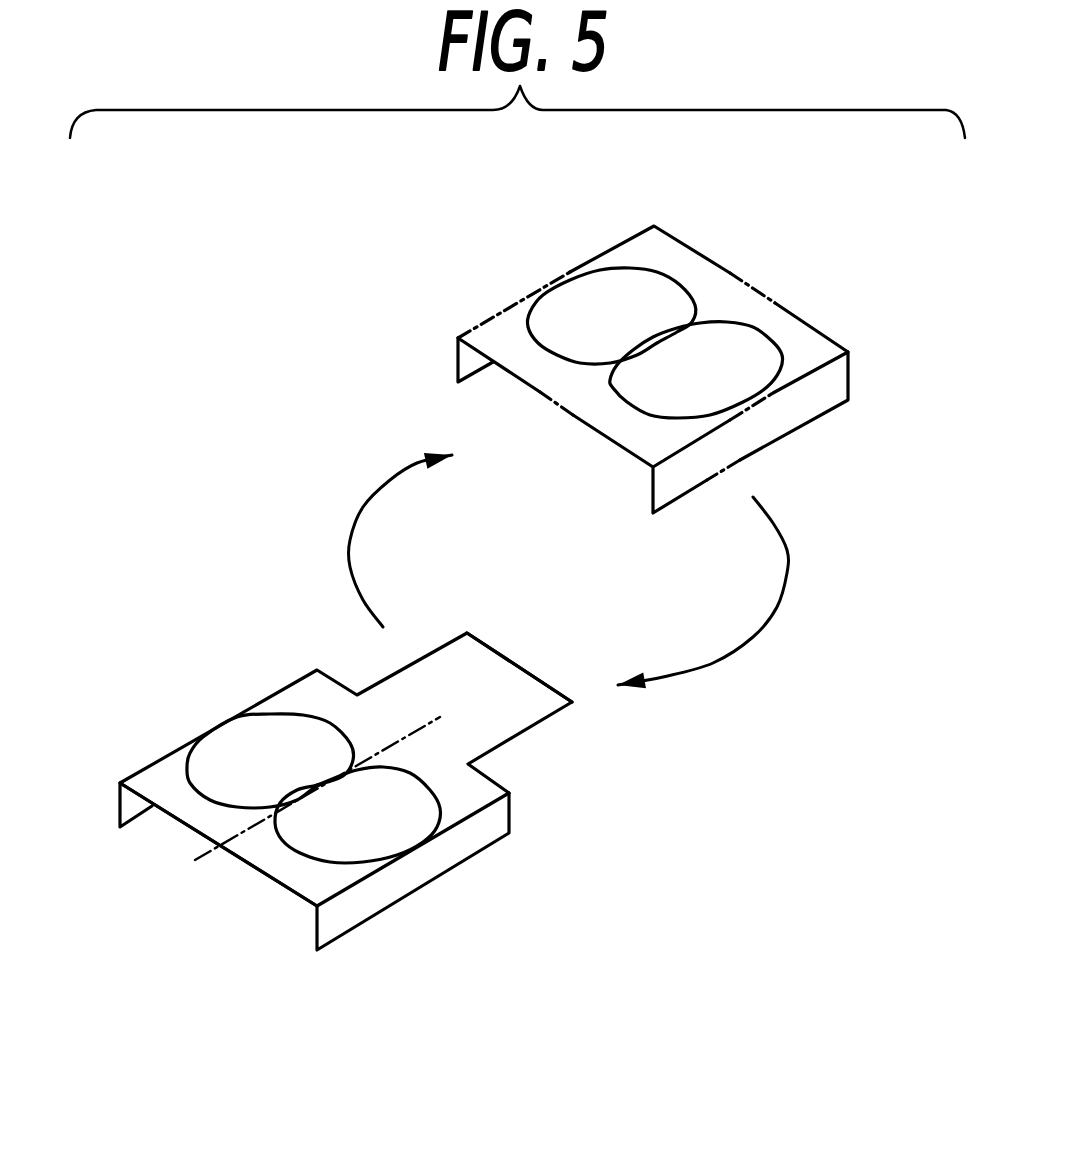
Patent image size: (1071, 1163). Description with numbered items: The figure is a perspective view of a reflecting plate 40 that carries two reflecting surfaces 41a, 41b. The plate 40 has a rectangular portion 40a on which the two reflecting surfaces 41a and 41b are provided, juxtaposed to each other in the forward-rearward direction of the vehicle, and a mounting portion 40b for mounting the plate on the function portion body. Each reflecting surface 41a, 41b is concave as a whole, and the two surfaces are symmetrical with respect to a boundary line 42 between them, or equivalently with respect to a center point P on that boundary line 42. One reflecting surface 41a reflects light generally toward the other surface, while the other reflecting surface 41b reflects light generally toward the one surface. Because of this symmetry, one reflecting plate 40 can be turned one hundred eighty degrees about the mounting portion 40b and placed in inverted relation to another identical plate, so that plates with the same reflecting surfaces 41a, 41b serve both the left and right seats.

The reflecting plate 40 is at (805, 428).
The rectangular portion 40a is at (287, 870).
The mounting portion 40b is at (497, 702).
The reflecting surface 41a is at (397, 815).
The reflecting surface 41b is at (265, 737).
The boundary line 42 is at (205, 852).
The center point P is at (318, 783).